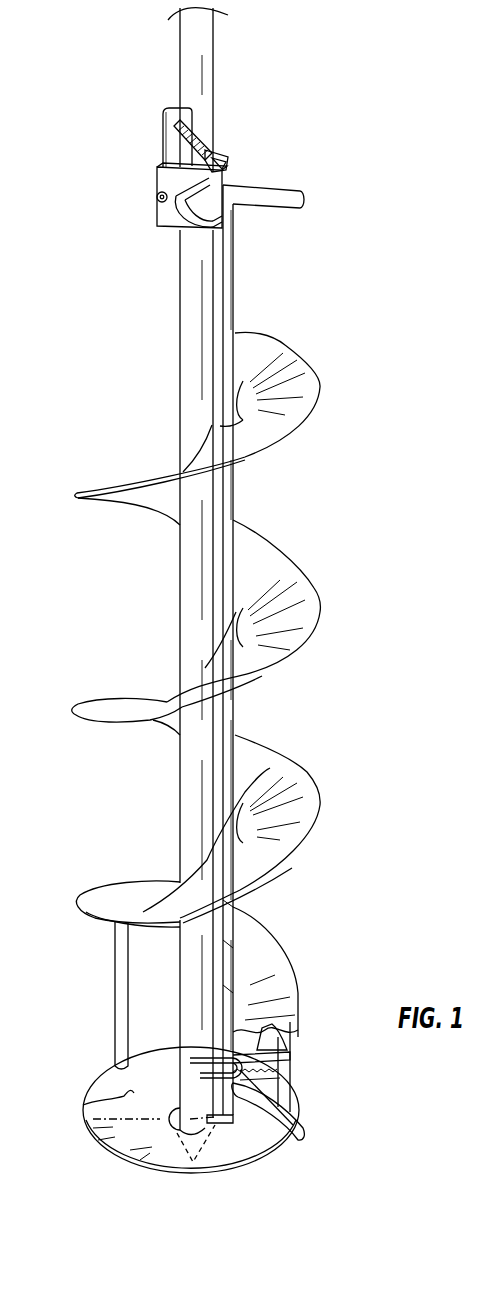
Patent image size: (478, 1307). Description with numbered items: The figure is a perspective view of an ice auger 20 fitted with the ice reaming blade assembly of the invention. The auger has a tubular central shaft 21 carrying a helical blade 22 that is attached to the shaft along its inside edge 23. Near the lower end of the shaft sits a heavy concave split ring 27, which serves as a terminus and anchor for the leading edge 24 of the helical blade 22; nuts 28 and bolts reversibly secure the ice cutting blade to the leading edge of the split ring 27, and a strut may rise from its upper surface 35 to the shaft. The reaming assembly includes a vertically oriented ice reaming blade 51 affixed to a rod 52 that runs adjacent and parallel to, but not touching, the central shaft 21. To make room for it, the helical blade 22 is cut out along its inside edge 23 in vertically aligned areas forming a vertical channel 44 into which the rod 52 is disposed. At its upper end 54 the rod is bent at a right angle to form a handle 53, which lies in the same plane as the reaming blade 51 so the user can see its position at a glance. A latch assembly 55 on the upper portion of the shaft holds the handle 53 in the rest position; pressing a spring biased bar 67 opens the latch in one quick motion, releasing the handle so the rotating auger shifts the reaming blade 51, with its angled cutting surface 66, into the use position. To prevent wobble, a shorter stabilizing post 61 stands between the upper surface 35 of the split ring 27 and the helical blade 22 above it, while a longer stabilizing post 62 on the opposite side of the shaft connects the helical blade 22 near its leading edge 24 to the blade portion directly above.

The ice auger 20 is at (272, 497).
The tubular central shaft 21 is at (203, 70).
The helical blade 22 is at (292, 590).
The inside edge 23 is at (180, 468).
The leading edge 24 is at (167, 1031).
The split ring 27 is at (233, 1150).
The nuts 28 is at (262, 1032).
The upper surface 35 is at (133, 1147).
The vertical channel 44 is at (265, 338).
The ice reaming blade 51 is at (267, 1103).
The rod 52 is at (227, 732).
The handle 53 is at (268, 190).
The upper end 54 is at (228, 259).
The latch assembly 55 is at (150, 160).
The shorter stabilizing post 61 is at (278, 1067).
The longer stabilizing post 62 is at (115, 995).
The cutting surface 66 is at (300, 1133).
The spring biased bar 67 is at (196, 133).